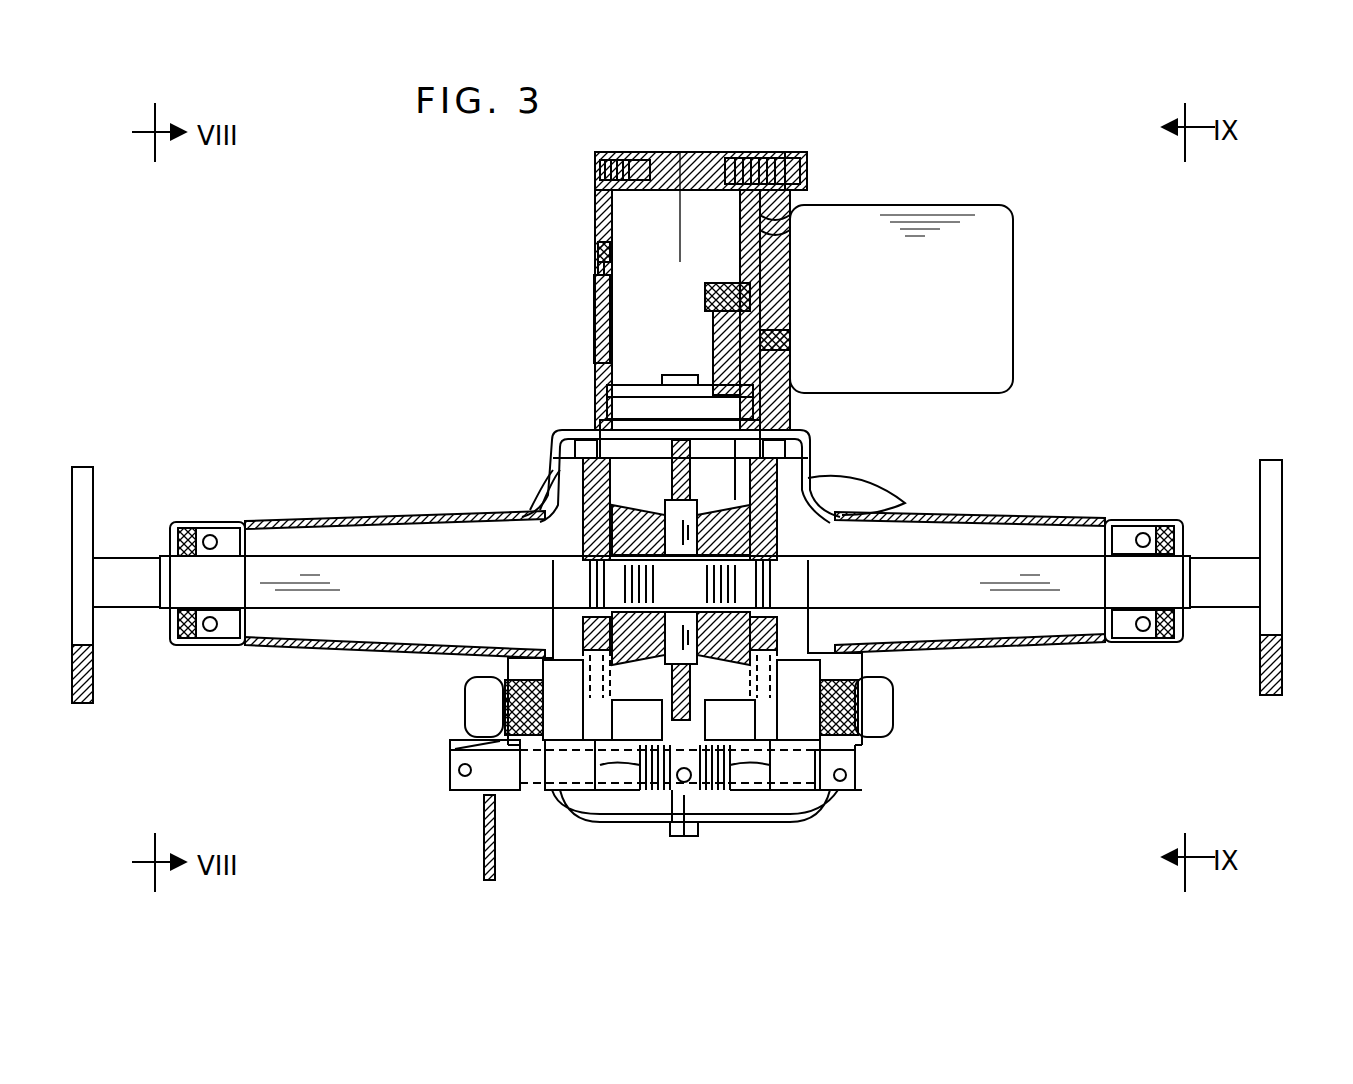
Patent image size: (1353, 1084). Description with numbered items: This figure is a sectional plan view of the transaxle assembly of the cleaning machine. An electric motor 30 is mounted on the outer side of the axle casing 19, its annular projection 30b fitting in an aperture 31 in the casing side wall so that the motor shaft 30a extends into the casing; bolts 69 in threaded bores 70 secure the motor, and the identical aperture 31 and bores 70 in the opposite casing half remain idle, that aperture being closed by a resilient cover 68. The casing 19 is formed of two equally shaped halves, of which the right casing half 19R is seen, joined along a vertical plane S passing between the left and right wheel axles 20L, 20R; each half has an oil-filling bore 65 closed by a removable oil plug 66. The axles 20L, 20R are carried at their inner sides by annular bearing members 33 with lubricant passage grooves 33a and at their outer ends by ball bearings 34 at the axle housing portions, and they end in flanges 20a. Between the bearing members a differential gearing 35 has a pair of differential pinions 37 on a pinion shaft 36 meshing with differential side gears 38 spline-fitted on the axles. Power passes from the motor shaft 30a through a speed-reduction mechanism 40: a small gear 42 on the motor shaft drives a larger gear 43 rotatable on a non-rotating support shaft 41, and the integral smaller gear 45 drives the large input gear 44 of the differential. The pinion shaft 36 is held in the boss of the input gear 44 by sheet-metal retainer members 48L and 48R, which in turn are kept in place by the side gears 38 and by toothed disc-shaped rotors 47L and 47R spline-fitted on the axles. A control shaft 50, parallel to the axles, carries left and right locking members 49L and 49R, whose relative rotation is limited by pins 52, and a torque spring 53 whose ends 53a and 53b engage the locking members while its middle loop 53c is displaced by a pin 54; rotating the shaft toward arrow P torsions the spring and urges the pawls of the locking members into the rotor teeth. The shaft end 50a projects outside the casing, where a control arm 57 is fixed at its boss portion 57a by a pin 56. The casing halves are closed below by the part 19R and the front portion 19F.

The axle casing 19 is at (822, 470).
The front housing part 19F is at (552, 458).
The right casing half 19R is at (835, 810).
The left wheel axle 20L is at (340, 585).
The right wheel axle 20R is at (1030, 590).
The wheel flange 20a is at (88, 470).
The motor 30 is at (985, 268).
The motor shaft 30a is at (768, 300).
The annular projection 30b is at (752, 262).
The aperture 31 is at (597, 250).
The bearing member 33 is at (515, 513).
The lubricant passage groove 33a is at (840, 500).
The ball bearing 34 is at (1140, 522).
The differential gearing 35 is at (592, 428).
The pinion shaft 36 is at (668, 666).
The differential pinion 37 is at (740, 490).
The differential side gear 38 is at (850, 520).
The speed-reduction mechanism 40 is at (687, 353).
The support shaft 41 is at (643, 415).
The small gear 42 is at (775, 230).
The larger gear 43 is at (737, 472).
The input gear 44 is at (697, 829).
The smaller gear 45 is at (682, 376).
The left rotor 47L is at (560, 455).
The right rotor 47R is at (765, 440).
The left retainer member 48L is at (590, 600).
The right retainer member 48R is at (790, 576).
The left locking member 49L is at (545, 633).
The right locking member 49R is at (852, 712).
The control shaft 50 is at (852, 770).
The end of control shaft 50a is at (453, 777).
The pin 52 is at (562, 781).
The torque spring 53 is at (650, 796).
The one end of torque spring 53a is at (640, 786).
The other end of torque spring 53b is at (762, 791).
The loop 53c is at (686, 794).
The pin 54 is at (660, 800).
The pin 56 is at (465, 778).
The control arm 57 is at (494, 842).
The boss portion 57a is at (455, 745).
The oil-filling bore 65 is at (500, 705).
The oil plug 66 is at (485, 701).
The cover 68 is at (592, 258).
The bolt 69 is at (800, 166).
The threaded bore 70 is at (618, 183).
The vertical plane S is at (690, 208).
The arrow P is at (432, 772).